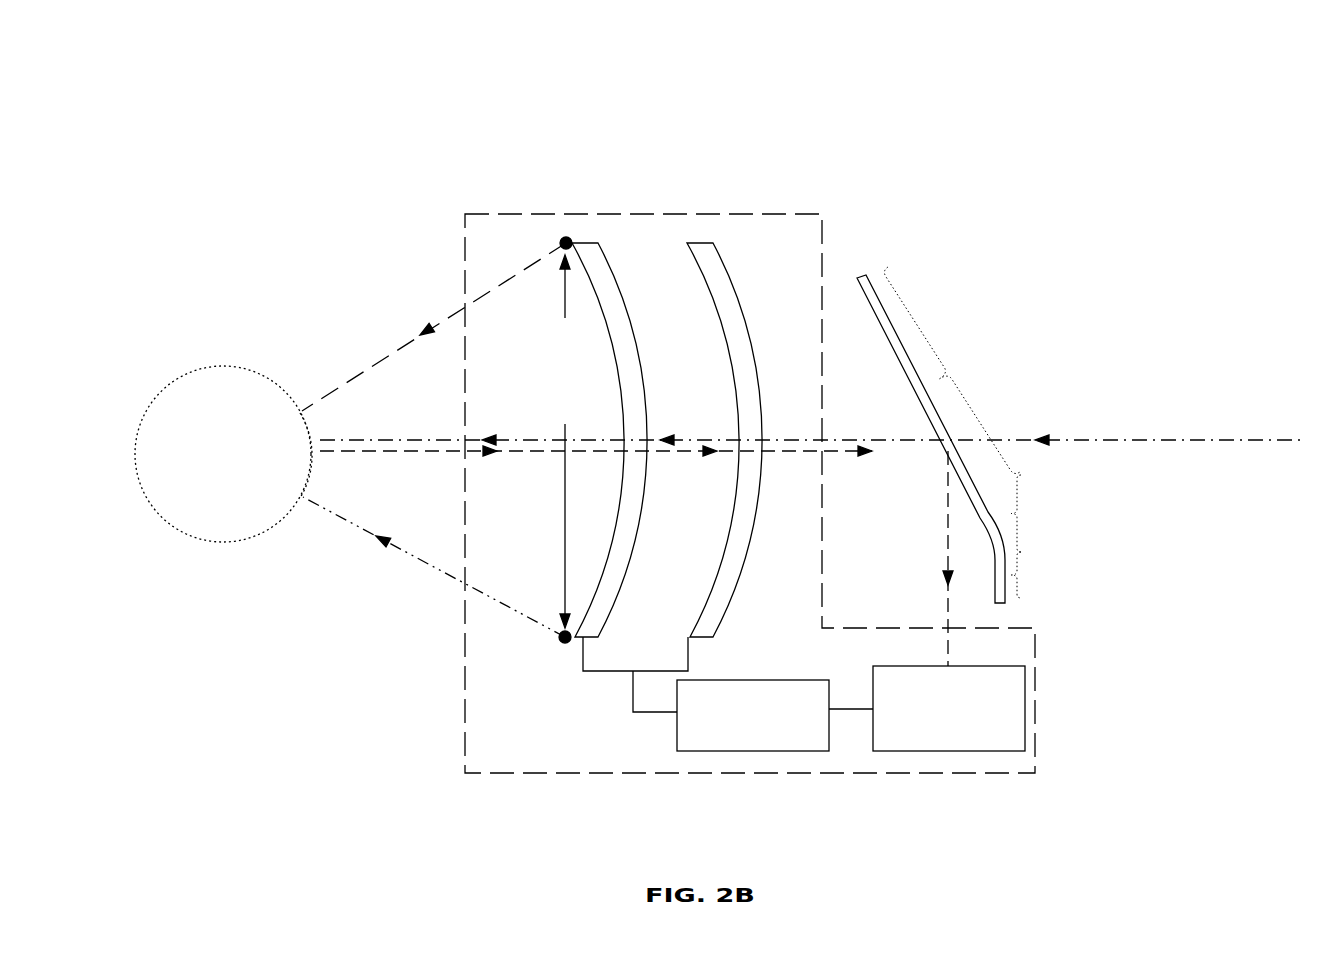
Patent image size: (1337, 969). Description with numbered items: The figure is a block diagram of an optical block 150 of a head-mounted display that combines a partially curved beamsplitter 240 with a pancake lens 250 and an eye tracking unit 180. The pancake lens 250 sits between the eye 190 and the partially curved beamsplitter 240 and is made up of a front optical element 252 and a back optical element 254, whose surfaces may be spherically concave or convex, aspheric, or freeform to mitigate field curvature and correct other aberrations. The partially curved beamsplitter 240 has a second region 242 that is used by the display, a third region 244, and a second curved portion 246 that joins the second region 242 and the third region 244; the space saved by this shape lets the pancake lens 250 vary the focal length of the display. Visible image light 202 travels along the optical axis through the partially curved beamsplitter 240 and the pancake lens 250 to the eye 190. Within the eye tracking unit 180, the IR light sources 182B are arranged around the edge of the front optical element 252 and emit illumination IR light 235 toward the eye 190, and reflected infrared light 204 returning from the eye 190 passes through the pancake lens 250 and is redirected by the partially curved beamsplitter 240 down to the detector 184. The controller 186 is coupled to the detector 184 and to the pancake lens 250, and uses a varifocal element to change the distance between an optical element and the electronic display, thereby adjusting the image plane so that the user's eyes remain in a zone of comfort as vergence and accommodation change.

The optical block 150 is at (180, 71).
The eye 190 is at (207, 475).
The eye tracking unit 180 is at (890, 775).
The pancake lens 250 is at (565, 213).
The front optical element 252 is at (598, 268).
The back optical element 254 is at (712, 277).
The IR light sources 182B is at (595, 474).
The controller 186 is at (735, 738).
The detector 184 is at (931, 732).
The partially curved beamsplitter 240 is at (860, 270).
The second region 242 is at (997, 370).
The second curved portion 246 is at (1102, 513).
The third region 244 is at (1094, 578).
The visible image light 202 is at (1217, 438).
The reflected infrared light 204 is at (367, 480).
The illumination IR light 235 is at (448, 578).